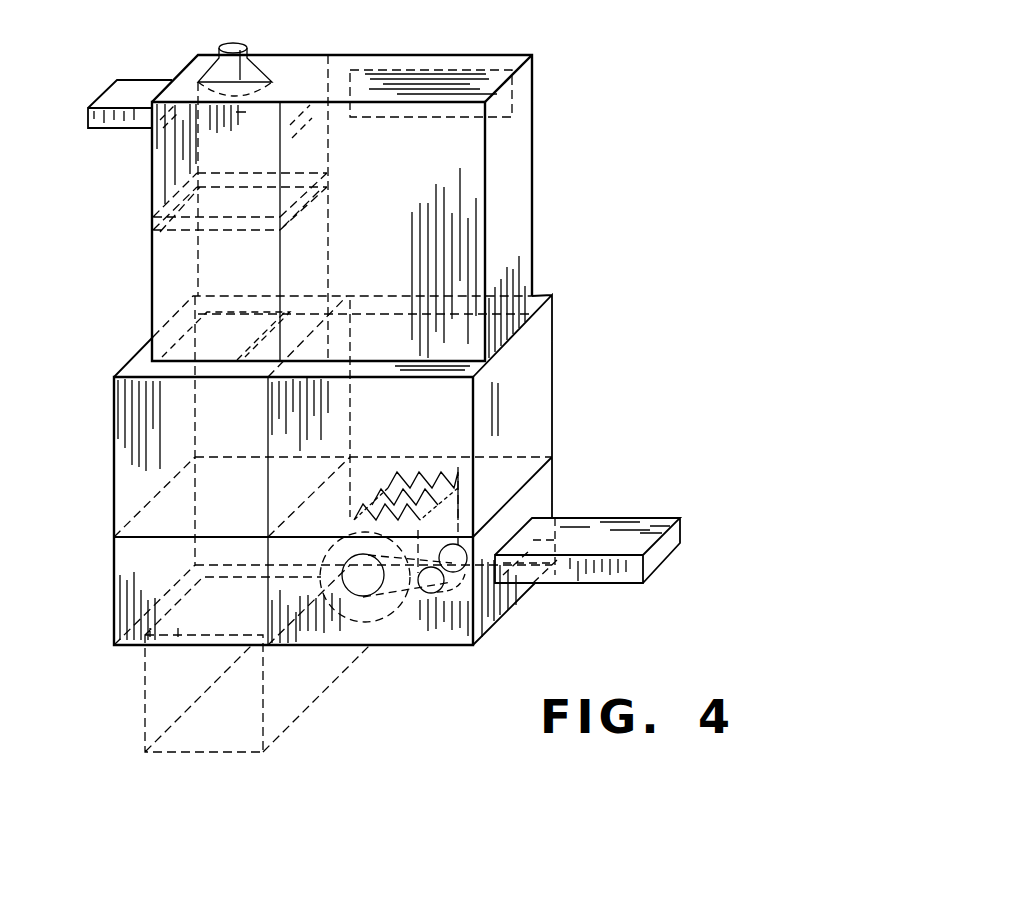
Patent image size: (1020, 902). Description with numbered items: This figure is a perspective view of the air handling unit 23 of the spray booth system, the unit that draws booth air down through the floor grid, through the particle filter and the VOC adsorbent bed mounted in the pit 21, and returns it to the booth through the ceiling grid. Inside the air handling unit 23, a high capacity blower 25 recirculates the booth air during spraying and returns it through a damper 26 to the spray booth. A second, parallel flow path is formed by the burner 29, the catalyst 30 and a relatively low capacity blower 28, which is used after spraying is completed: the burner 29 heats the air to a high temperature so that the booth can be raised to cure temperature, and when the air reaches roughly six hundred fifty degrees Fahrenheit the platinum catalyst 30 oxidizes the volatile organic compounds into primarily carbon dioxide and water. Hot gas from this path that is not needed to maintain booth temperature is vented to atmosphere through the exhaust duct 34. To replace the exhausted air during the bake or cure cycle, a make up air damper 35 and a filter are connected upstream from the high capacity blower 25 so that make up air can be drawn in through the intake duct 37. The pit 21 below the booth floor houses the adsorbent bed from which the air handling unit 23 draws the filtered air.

The pit 21 is at (294, 705).
The air handling unit 23 is at (537, 173).
The high capacity blower 25 is at (392, 600).
The damper 26 is at (417, 473).
The low capacity blower 28 is at (213, 370).
The burner 29 is at (250, 55).
The catalyst 30 is at (190, 220).
The exhaust duct 34 is at (113, 128).
The make up air damper 35 is at (560, 534).
The intake duct 37 is at (625, 578).